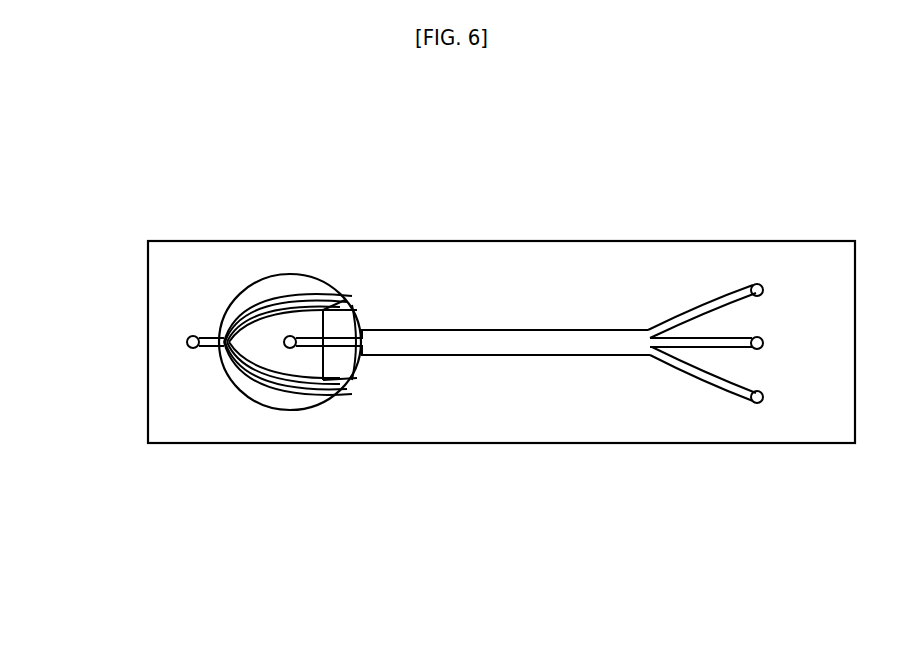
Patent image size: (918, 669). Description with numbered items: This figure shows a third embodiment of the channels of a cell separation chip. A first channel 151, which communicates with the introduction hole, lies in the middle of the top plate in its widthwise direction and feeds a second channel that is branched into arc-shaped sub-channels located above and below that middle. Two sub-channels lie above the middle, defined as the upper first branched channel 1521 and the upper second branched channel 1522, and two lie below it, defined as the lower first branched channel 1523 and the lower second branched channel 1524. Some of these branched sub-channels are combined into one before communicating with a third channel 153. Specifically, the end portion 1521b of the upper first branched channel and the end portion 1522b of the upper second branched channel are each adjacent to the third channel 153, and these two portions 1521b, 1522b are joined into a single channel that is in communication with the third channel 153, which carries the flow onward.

The first channel 151 is at (212, 330).
The 2-1st channel 1521 is at (237, 290).
The portion of the 2-1st channel 1521b is at (350, 297).
The 2-2nd channel 1522 is at (282, 307).
The portion of the 2-2nd channel 1522b is at (337, 397).
The 2-3rd channel 1523 is at (282, 378).
The 2-4th channel 1524 is at (238, 400).
The third channel 153 is at (427, 342).